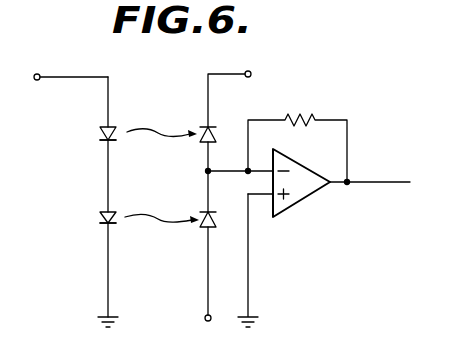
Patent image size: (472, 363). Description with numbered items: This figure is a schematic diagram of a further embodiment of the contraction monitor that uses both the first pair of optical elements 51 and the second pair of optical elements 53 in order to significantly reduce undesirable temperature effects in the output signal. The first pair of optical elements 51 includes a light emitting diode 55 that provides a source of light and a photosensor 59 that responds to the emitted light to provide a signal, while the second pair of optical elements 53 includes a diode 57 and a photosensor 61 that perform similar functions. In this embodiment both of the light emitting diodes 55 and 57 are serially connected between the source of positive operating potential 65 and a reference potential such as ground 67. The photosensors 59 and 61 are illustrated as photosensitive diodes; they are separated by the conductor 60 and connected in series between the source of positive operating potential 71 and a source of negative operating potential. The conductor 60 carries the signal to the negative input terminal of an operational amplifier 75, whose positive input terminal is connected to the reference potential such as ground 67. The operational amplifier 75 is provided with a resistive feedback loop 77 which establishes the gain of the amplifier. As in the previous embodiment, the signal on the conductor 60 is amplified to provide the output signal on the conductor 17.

The conductor 17 is at (378, 181).
The first pair of optical elements 51 is at (86, 124).
The second pair of optical elements 53 is at (88, 203).
The light emitting diode 55 is at (100, 135).
The diode 57 is at (98, 218).
The photosensor 59 is at (213, 131).
The conductor 60 is at (207, 156).
The photosensor 61 is at (205, 230).
The source of positive operating potential 65 is at (38, 74).
The ground 67 is at (106, 316).
The source of positive operating potential 71 is at (289, 59).
The operational amplifier 75 is at (292, 156).
The resistive feedback loop 77 is at (310, 104).